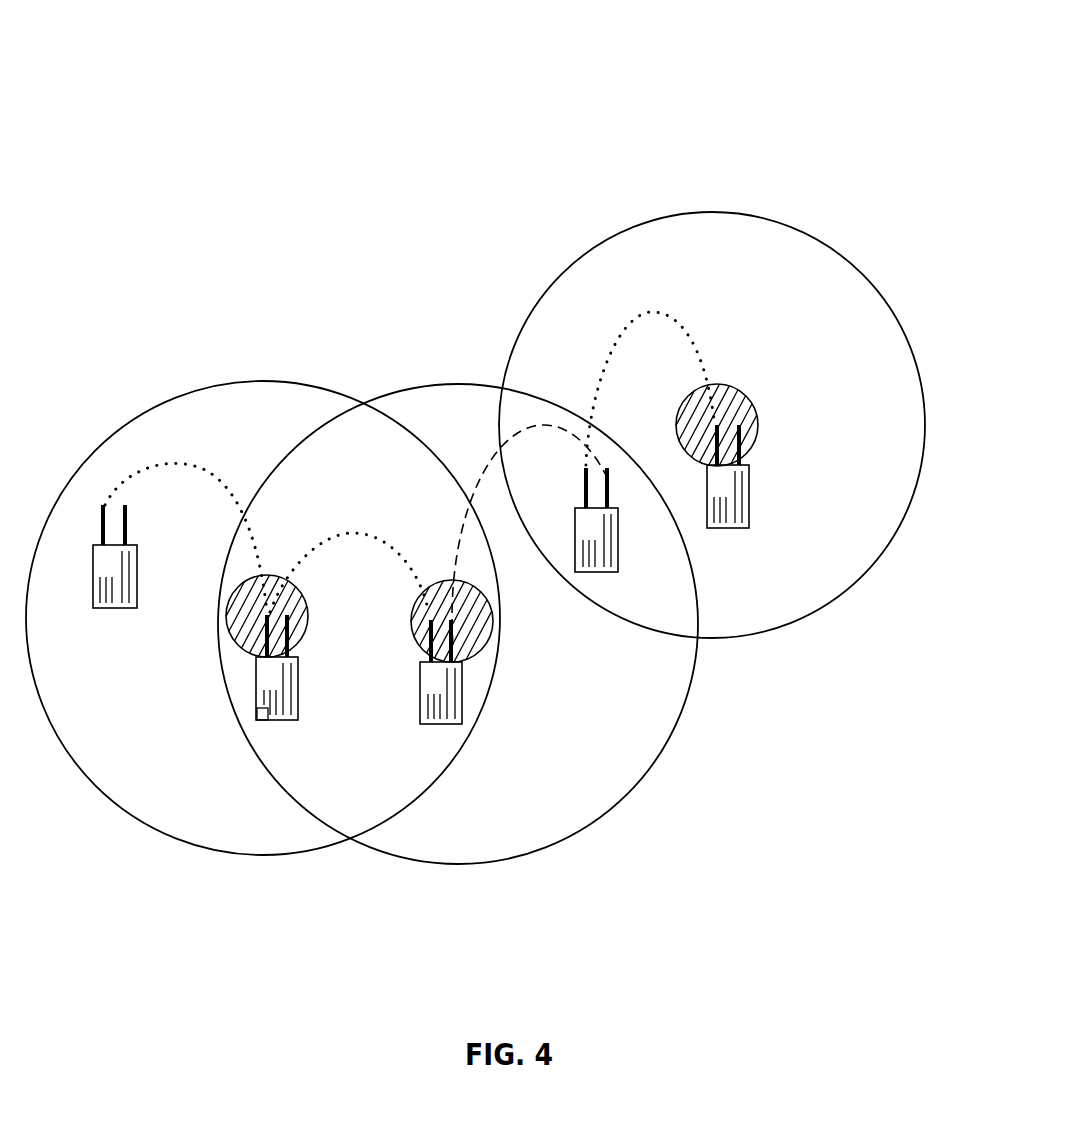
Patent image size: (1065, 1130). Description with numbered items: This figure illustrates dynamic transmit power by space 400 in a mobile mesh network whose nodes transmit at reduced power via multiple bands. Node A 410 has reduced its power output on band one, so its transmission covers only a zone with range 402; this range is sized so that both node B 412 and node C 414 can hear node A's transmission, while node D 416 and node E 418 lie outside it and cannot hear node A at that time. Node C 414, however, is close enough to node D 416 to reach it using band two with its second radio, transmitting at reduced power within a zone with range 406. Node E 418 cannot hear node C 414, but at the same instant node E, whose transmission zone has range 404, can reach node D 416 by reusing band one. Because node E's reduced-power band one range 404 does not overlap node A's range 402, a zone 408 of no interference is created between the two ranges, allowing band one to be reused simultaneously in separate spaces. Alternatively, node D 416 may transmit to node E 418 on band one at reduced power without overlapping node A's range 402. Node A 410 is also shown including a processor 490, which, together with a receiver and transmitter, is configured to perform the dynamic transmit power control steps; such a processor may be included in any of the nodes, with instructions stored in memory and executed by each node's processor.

The dynamic transmit power by space 400 is at (127, 28).
The node A band 1 reduced power range 402 is at (230, 435).
The node E band 1 reduced power range 404 is at (765, 257).
The node C band 2 reduced power range 406 is at (452, 838).
The zone of no interference 408 is at (523, 613).
The node A 410 is at (192, 737).
The node B 412 is at (110, 615).
The node C 414 is at (438, 732).
The node D 416 is at (568, 497).
The node E 418 is at (728, 531).
The processor 490 is at (166, 804).